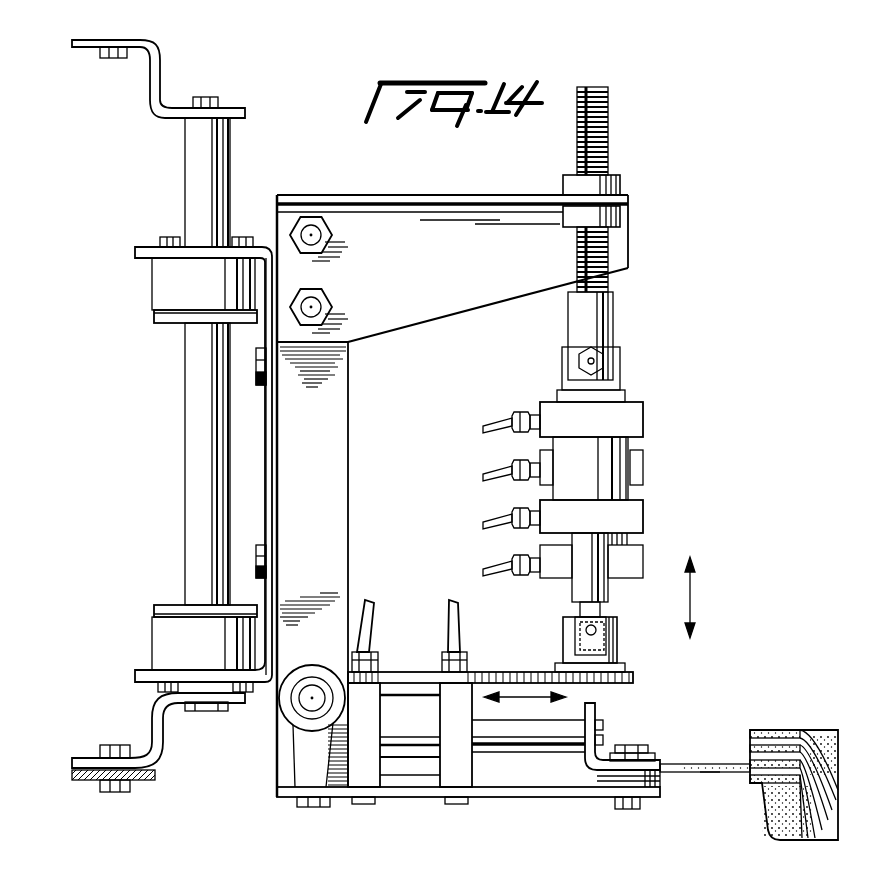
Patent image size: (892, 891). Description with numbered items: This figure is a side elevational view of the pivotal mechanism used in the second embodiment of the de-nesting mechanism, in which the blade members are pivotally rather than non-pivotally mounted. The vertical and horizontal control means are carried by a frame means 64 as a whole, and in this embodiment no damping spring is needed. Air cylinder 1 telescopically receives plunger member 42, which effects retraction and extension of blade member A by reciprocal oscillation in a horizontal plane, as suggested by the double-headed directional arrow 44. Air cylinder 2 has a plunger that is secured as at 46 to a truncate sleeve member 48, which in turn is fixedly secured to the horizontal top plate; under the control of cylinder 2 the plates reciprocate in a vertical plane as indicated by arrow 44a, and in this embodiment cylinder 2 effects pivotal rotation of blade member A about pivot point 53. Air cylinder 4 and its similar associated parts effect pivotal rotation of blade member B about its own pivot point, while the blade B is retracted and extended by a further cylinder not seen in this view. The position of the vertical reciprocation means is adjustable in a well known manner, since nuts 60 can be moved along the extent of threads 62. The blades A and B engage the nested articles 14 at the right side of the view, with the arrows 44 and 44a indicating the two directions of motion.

The air cylinder 1 is at (452, 770).
The air cylinder 2 is at (637, 418).
The air cylinder 4 is at (643, 470).
The workpiece 14 is at (790, 722).
The plunger member 42 is at (530, 745).
The double-headed directional arrow 44 is at (525, 706).
The arrow 44a is at (693, 597).
The securing point 46 is at (589, 632).
The truncate sleeve member 48 is at (617, 648).
The pivot point 53 is at (302, 713).
The nuts 60 is at (617, 184).
The threads 62 is at (607, 125).
The frame means 64 is at (266, 465).
The blade member A is at (672, 767).
The blade member B is at (708, 775).